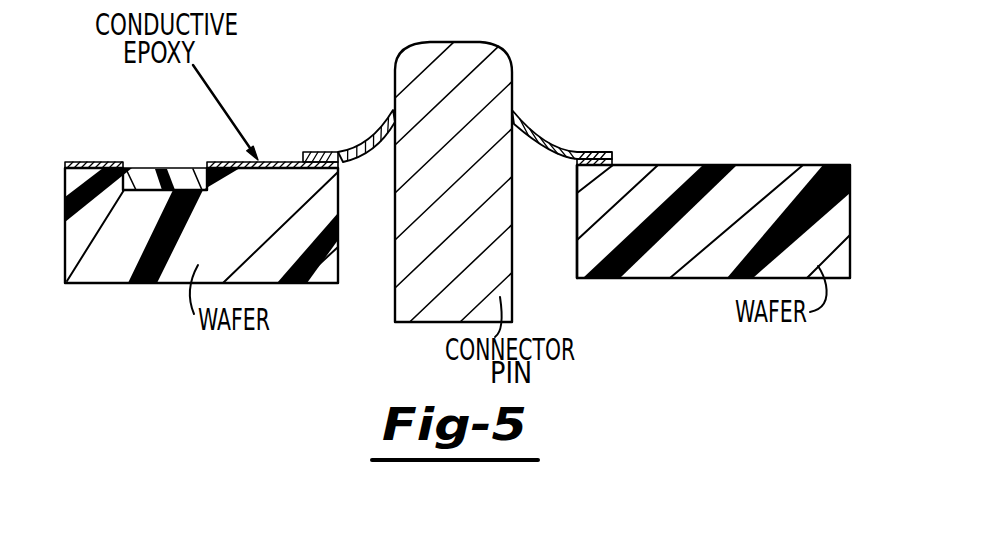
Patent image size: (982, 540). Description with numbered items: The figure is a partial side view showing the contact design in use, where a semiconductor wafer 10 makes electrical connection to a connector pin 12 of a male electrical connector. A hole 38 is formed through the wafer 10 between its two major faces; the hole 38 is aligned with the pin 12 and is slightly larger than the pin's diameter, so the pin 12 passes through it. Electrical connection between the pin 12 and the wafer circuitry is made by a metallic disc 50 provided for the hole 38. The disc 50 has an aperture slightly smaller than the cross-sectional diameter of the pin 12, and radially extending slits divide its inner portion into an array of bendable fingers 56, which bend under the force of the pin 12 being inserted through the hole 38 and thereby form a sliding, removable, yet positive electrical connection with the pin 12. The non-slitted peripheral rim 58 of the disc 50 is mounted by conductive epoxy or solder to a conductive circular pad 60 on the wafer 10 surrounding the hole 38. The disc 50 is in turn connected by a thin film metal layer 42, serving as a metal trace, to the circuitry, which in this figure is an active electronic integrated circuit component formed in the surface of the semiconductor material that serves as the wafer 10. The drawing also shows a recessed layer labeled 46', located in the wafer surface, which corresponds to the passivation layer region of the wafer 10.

The wafer 10 is at (842, 218).
The pin 12 is at (410, 308).
The hole 38 is at (577, 258).
The thin film metal layer 42 is at (90, 161).
The resistive element 46' is at (165, 143).
The metallic disc 50 is at (553, 133).
The bendable fingers 56 is at (375, 127).
The peripheral rim 58 is at (313, 152).
The conductive circular pad 60 is at (340, 163).